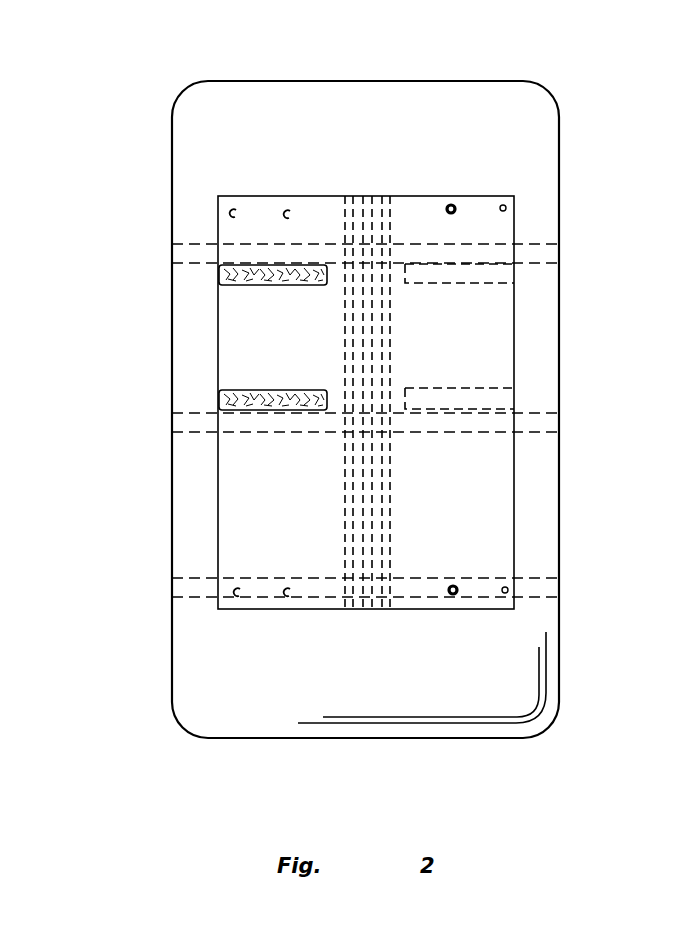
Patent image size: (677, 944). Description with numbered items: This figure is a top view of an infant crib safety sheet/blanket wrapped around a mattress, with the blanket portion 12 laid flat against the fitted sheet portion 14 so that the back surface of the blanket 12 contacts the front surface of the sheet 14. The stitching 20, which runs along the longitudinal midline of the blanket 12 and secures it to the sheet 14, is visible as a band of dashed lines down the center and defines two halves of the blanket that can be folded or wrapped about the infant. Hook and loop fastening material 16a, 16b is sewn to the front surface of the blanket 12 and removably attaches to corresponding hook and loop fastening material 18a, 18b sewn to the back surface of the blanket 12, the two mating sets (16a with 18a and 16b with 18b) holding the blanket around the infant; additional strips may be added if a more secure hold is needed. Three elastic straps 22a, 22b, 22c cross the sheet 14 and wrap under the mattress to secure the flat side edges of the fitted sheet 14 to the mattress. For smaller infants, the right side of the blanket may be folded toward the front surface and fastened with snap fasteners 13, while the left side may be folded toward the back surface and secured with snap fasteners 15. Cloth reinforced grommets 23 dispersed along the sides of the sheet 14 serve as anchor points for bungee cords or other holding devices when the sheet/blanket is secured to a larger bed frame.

The blanket portion 12 is at (540, 491).
The snap fasteners 13 is at (451, 204).
The fitted sheet portion 14 is at (523, 675).
The snap fasteners 15 is at (287, 213).
The hook and loop fastening material 16a is at (243, 277).
The hook and loop fastening material 16b is at (220, 403).
The hook and loop fastening material 18a is at (492, 277).
The hook and loop fastening material 18b is at (507, 397).
The stitching 20 is at (383, 222).
The elastic strap 22a is at (172, 256).
The elastic strap 22b is at (172, 433).
The elastic strap 22c is at (172, 590).
The cloth reinforced grommets 23 is at (662, 391).